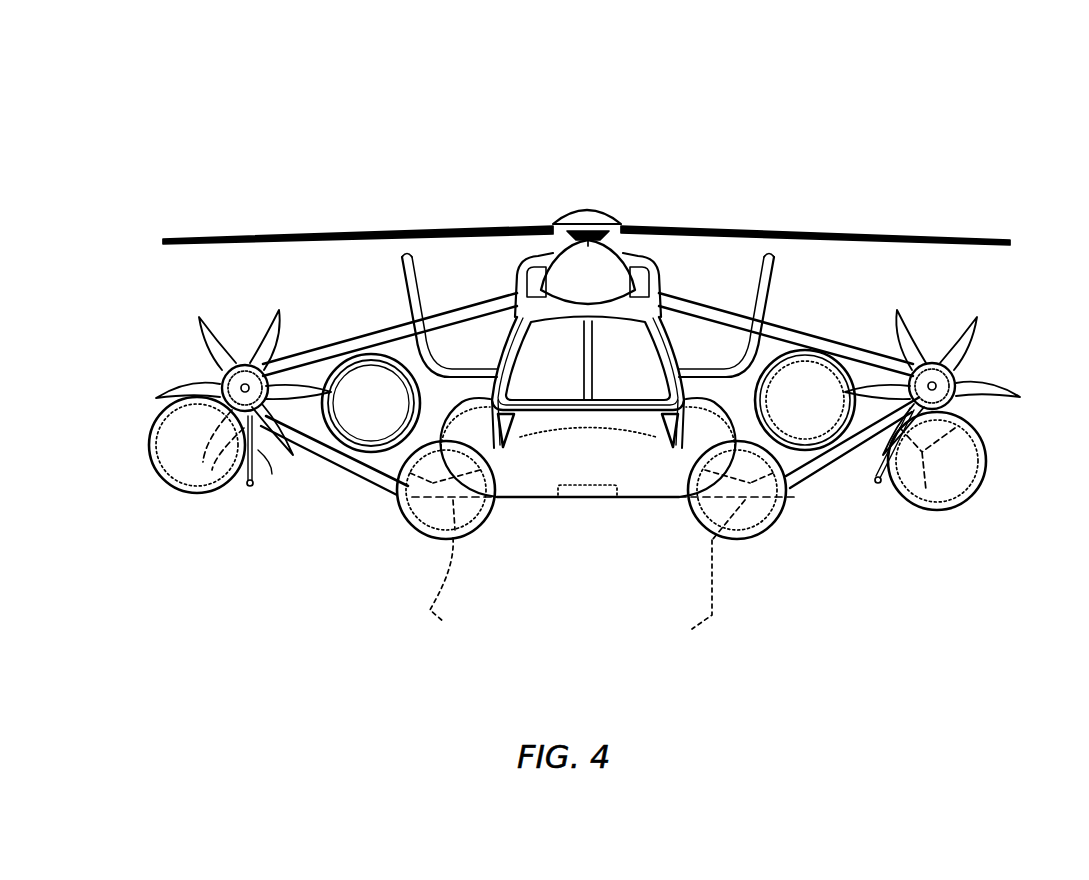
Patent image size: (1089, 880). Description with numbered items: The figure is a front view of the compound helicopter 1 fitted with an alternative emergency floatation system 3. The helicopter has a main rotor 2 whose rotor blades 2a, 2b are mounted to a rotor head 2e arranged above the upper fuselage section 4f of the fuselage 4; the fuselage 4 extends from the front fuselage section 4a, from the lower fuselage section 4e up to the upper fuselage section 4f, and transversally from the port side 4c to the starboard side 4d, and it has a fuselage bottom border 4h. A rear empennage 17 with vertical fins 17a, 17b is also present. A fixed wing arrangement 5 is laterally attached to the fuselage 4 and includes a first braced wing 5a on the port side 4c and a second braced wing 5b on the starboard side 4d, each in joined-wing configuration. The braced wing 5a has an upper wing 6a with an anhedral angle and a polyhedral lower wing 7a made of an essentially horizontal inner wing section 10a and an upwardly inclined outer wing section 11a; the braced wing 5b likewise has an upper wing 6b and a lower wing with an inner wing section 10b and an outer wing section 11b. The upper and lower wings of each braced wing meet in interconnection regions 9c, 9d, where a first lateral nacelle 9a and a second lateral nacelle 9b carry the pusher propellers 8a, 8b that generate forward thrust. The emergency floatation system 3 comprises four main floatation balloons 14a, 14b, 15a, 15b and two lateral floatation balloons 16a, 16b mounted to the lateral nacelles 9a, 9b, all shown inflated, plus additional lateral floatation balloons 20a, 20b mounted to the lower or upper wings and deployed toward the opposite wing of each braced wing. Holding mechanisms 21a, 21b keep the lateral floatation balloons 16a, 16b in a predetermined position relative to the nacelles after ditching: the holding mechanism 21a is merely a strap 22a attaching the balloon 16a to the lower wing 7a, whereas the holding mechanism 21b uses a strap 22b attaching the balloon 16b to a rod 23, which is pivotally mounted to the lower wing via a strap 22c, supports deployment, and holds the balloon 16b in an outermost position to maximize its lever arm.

The compound helicopter 1 is at (296, 102).
The main rotor 2 is at (586, 198).
The rotor blade 2a is at (224, 238).
The rotor blade 2b is at (952, 238).
The rotor head 2e is at (600, 190).
The emergency floatation system 3 is at (417, 555).
The fuselage 4 is at (603, 423).
The front fuselage section 4a is at (550, 462).
The port side 4c is at (700, 381).
The starboard side 4d is at (482, 388).
The lower fuselage section 4e is at (591, 500).
The upper fuselage section 4f is at (672, 276).
The fuselage bottom border 4h is at (516, 496).
The fixed wing arrangement 5 is at (364, 312).
The first braced wing 5a is at (784, 322).
The second braced wing 5b is at (396, 315).
The upper wing 6a is at (777, 345).
The upper wing 6b is at (360, 350).
The lower wing 7a is at (805, 490).
The first propeller 8a is at (986, 328).
The second propeller 8b is at (192, 330).
The first lateral nacelle 9a is at (956, 380).
The second lateral nacelle 9b is at (218, 380).
The interconnection region 9c is at (895, 407).
The interconnection region 9d is at (275, 403).
The inner wing section 10a is at (677, 591).
The inner wing section 10b is at (464, 590).
The outer wing section 11a is at (812, 522).
The outer wing section 11b is at (355, 462).
The main floatation balloon 14a is at (722, 540).
The main floatation balloon 14b is at (412, 524).
The main floatation balloon 15a is at (723, 401).
The main floatation balloon 15b is at (412, 462).
The first lateral floatation balloon 16a is at (988, 462).
The second lateral floatation balloon 16b is at (150, 436).
The rear empennage 17 is at (446, 352).
The vertical fin 17a is at (713, 292).
The vertical fin 17b is at (416, 292).
The additional lateral floatation balloon 20a is at (836, 378).
The additional lateral floatation balloon 20b is at (330, 355).
The holding mechanism 21a is at (886, 492).
The holding mechanism 21b is at (251, 500).
The strap 22a is at (879, 486).
The strap 22b is at (247, 488).
The strap 22c is at (256, 486).
The rod 23 is at (258, 450).